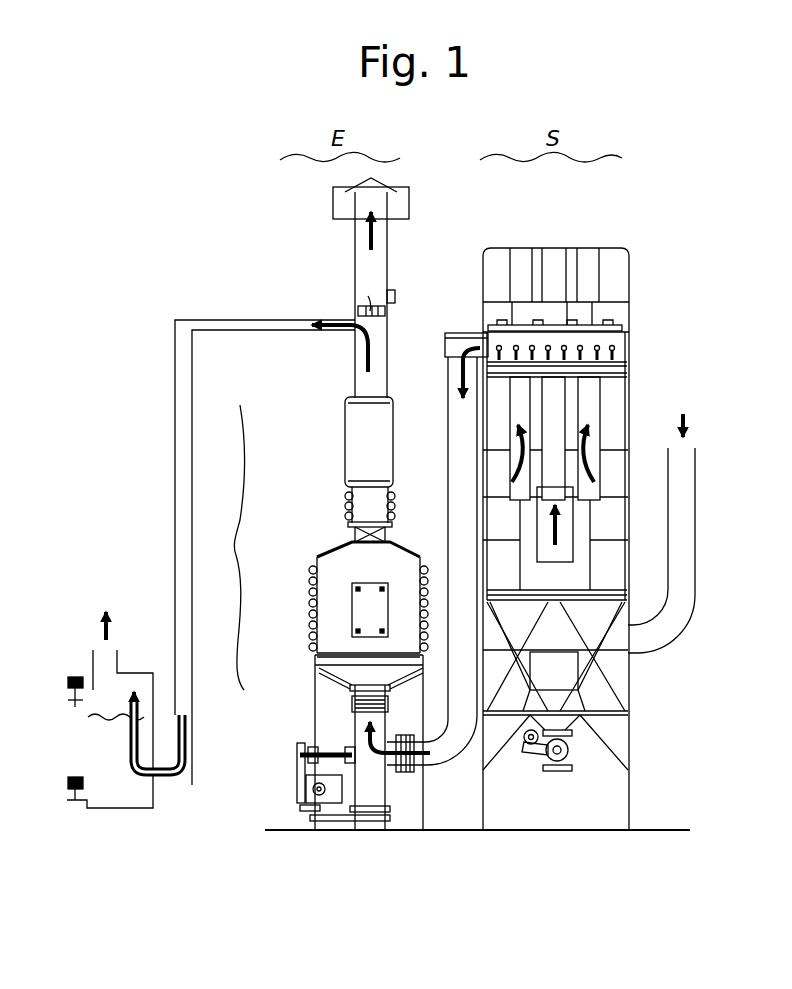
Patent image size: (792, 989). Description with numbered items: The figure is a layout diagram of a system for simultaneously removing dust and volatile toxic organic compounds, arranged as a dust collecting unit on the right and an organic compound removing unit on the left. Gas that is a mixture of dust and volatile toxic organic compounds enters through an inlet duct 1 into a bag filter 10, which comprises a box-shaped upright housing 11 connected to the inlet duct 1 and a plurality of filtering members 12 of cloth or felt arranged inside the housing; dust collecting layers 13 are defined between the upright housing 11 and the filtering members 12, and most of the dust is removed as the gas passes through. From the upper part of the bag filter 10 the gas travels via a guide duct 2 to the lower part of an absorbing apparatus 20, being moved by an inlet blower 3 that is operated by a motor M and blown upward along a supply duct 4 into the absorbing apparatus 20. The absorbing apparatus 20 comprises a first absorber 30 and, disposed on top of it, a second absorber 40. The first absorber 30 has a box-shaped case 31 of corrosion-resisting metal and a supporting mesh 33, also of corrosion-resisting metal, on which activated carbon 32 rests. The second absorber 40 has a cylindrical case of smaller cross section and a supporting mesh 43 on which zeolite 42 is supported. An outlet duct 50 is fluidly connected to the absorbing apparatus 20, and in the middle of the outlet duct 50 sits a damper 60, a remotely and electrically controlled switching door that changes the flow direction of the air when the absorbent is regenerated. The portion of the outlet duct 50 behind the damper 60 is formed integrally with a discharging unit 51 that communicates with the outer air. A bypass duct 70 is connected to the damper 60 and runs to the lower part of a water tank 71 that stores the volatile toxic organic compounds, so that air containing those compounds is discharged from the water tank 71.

The inlet duct 1 is at (683, 553).
The guide duct 2 is at (455, 452).
The inlet blower 3 is at (298, 767).
The supply duct 4 is at (363, 718).
The bag filter 10 is at (628, 410).
The upright housing 11 is at (630, 405).
The filtering members 12 is at (590, 448).
The dust collecting layers 13 is at (617, 527).
The absorbing apparatus 20 is at (222, 547).
The first absorber 30 is at (349, 607).
The case 31 is at (400, 545).
The activated carbon 32 is at (330, 612).
The supporting mesh 33 is at (318, 657).
The second absorber 40 is at (345, 493).
The zeolite 42 is at (382, 428).
The supporting mesh 43 is at (388, 501).
The outlet duct 50 is at (378, 378).
The discharging unit 51 is at (388, 258).
The damper 60 is at (392, 316).
The bypass duct 70 is at (232, 322).
The water tank 71 is at (90, 755).
The motor M is at (298, 795).